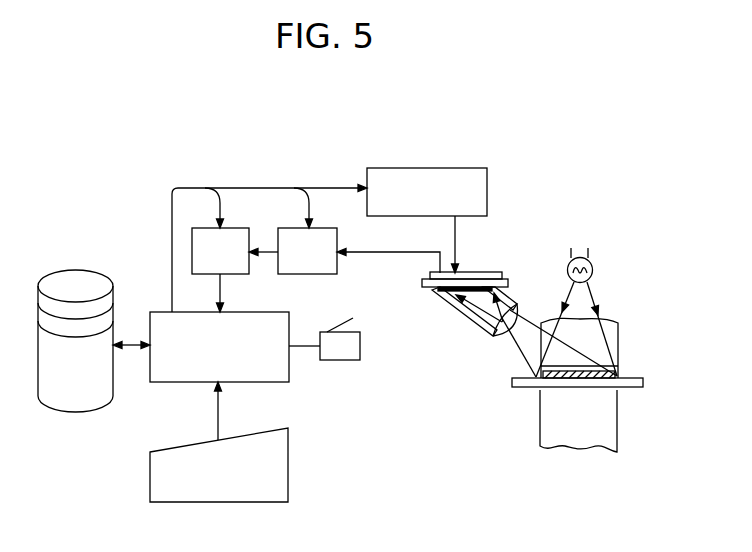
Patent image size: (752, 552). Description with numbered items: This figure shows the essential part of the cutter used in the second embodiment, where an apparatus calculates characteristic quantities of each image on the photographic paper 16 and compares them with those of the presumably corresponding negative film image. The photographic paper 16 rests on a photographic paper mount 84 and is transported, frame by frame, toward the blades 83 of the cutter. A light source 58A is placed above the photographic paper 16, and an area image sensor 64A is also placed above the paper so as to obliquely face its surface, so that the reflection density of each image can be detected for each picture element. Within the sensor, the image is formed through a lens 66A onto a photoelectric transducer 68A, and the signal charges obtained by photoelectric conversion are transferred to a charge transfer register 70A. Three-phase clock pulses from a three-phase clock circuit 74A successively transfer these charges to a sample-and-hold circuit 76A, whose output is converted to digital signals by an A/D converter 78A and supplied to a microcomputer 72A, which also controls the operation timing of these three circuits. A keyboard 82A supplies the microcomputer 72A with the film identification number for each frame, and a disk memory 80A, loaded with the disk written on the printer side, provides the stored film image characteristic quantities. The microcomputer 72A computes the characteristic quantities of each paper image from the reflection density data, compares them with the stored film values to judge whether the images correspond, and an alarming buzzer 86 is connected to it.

The photographic paper 16 is at (595, 366).
The light source 58A is at (590, 264).
The area image sensor 64A is at (483, 333).
The lens 66A is at (524, 310).
The photoelectric transducer 68A is at (473, 302).
The charge transfer register 70A is at (490, 273).
The three-phase clock circuit 74A is at (432, 168).
The sample-and-hold circuit 76A is at (318, 275).
The A/D converter 78A is at (236, 275).
The microcomputer 72A is at (262, 384).
The disk memory 80A is at (78, 413).
The keyboard 82A is at (289, 463).
The blades 83 is at (540, 428).
The photographic paper mount 84 is at (522, 388).
The alarming buzzer 86 is at (345, 362).